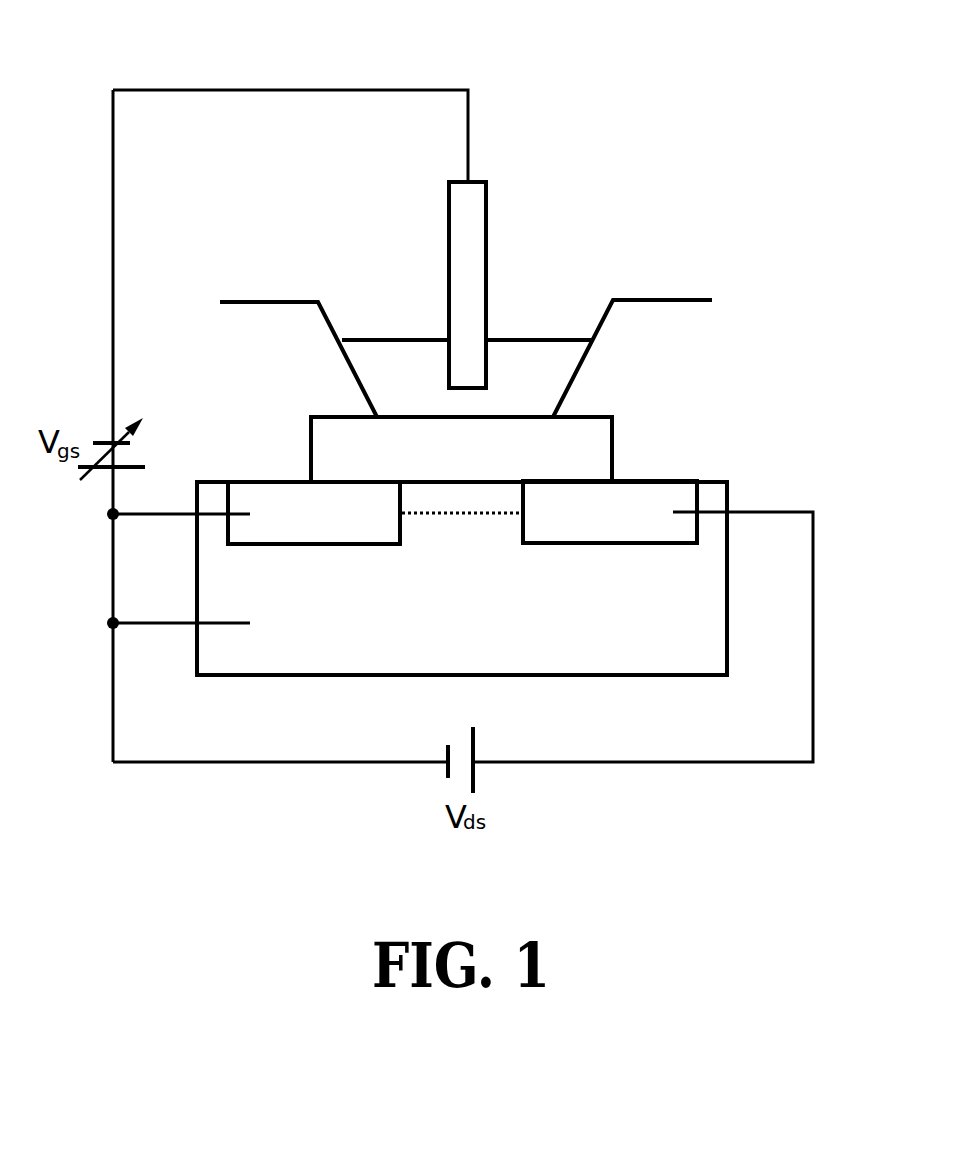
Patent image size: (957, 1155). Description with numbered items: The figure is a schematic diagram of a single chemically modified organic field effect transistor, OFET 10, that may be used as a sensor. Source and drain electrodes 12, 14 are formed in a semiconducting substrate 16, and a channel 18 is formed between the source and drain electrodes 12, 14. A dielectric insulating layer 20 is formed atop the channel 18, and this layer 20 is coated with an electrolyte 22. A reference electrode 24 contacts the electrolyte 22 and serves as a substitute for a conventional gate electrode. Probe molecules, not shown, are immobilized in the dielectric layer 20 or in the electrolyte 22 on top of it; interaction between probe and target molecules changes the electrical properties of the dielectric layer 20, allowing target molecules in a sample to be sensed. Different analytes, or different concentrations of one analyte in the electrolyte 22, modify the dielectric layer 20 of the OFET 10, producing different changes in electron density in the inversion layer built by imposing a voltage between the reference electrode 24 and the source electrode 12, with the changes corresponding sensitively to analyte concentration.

The OFET 10 is at (765, 101).
The source electrode 12 is at (278, 500).
The drain electrode 14 is at (650, 500).
The semiconducting substrate 16 is at (702, 592).
The channel 18 is at (433, 497).
The dielectric insulating layer 20 is at (573, 428).
The electrolyte 22 is at (393, 365).
The reference electrode 24 is at (460, 203).